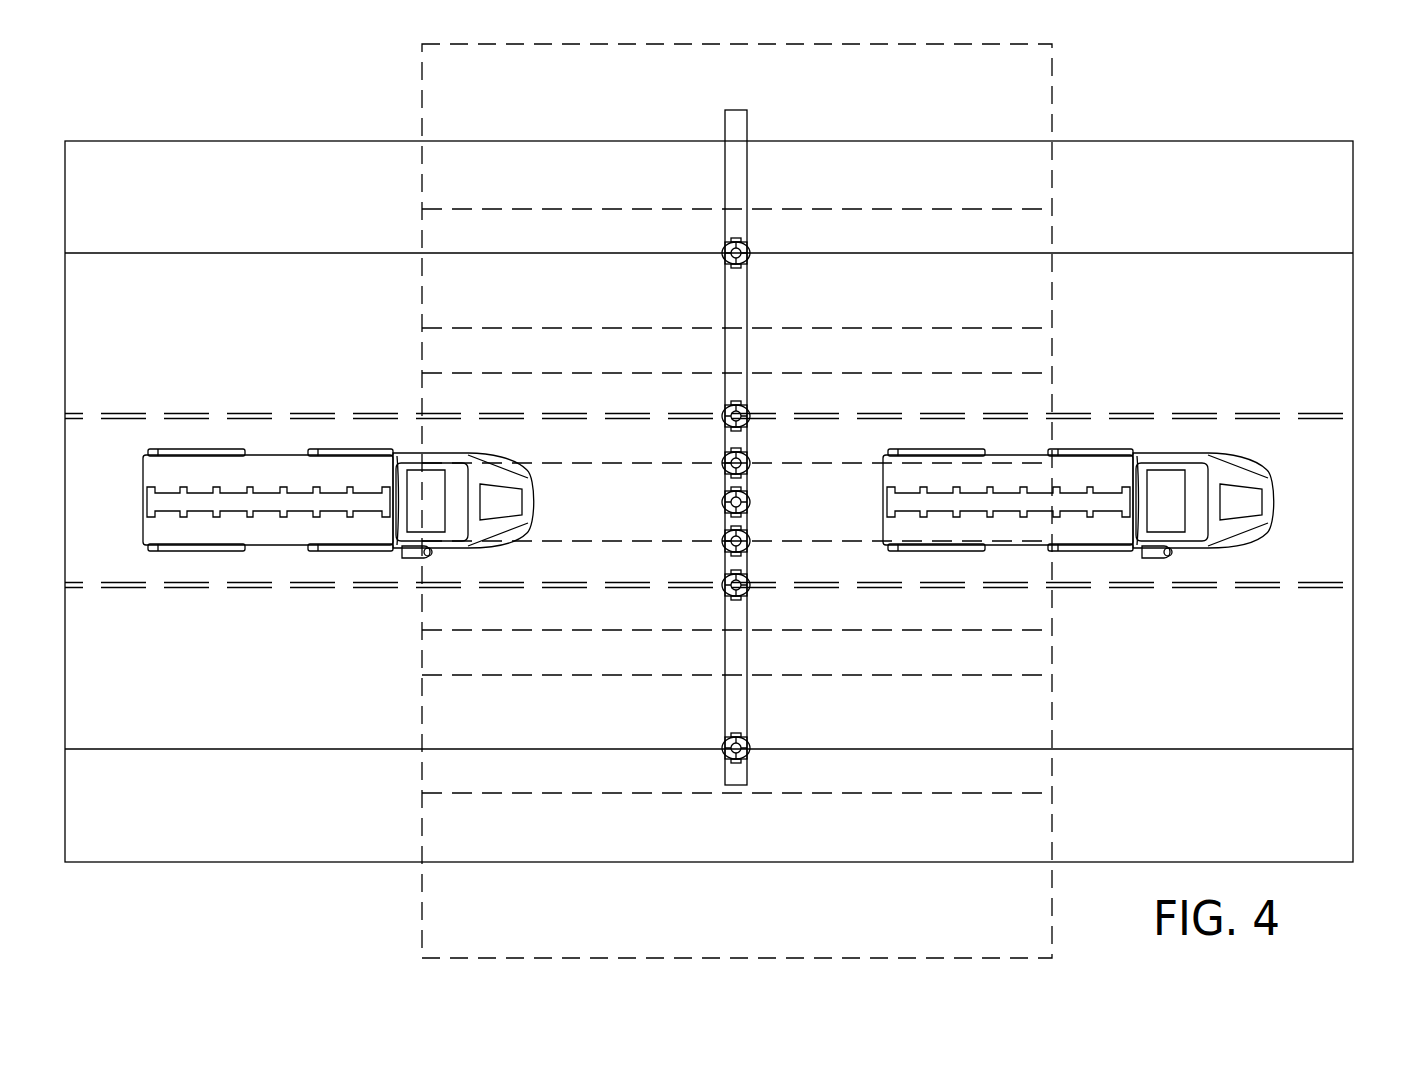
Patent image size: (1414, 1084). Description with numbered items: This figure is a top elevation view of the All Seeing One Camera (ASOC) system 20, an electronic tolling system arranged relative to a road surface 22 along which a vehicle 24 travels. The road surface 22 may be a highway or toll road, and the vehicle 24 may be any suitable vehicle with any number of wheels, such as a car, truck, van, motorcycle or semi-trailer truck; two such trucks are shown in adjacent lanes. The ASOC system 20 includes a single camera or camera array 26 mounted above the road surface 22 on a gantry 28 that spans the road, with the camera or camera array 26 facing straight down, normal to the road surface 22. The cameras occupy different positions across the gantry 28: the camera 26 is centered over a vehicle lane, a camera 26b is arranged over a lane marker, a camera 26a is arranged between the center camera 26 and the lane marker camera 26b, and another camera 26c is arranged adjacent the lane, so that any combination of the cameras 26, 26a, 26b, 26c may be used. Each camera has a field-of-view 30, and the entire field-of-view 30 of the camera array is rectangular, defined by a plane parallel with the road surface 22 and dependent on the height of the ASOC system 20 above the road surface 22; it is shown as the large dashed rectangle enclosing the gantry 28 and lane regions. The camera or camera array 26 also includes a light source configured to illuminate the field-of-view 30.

The All Seeing One Camera (ASOC) system 20 is at (680, 392).
The road surface 22 is at (120, 862).
The vehicle 24 is at (195, 540).
The camera or camera array 26 is at (722, 501).
The camera 26a is at (737, 462).
The camera 26b is at (737, 414).
The camera 26c is at (745, 243).
The gantry 28 is at (737, 125).
The field-of-view 30 is at (447, 912).